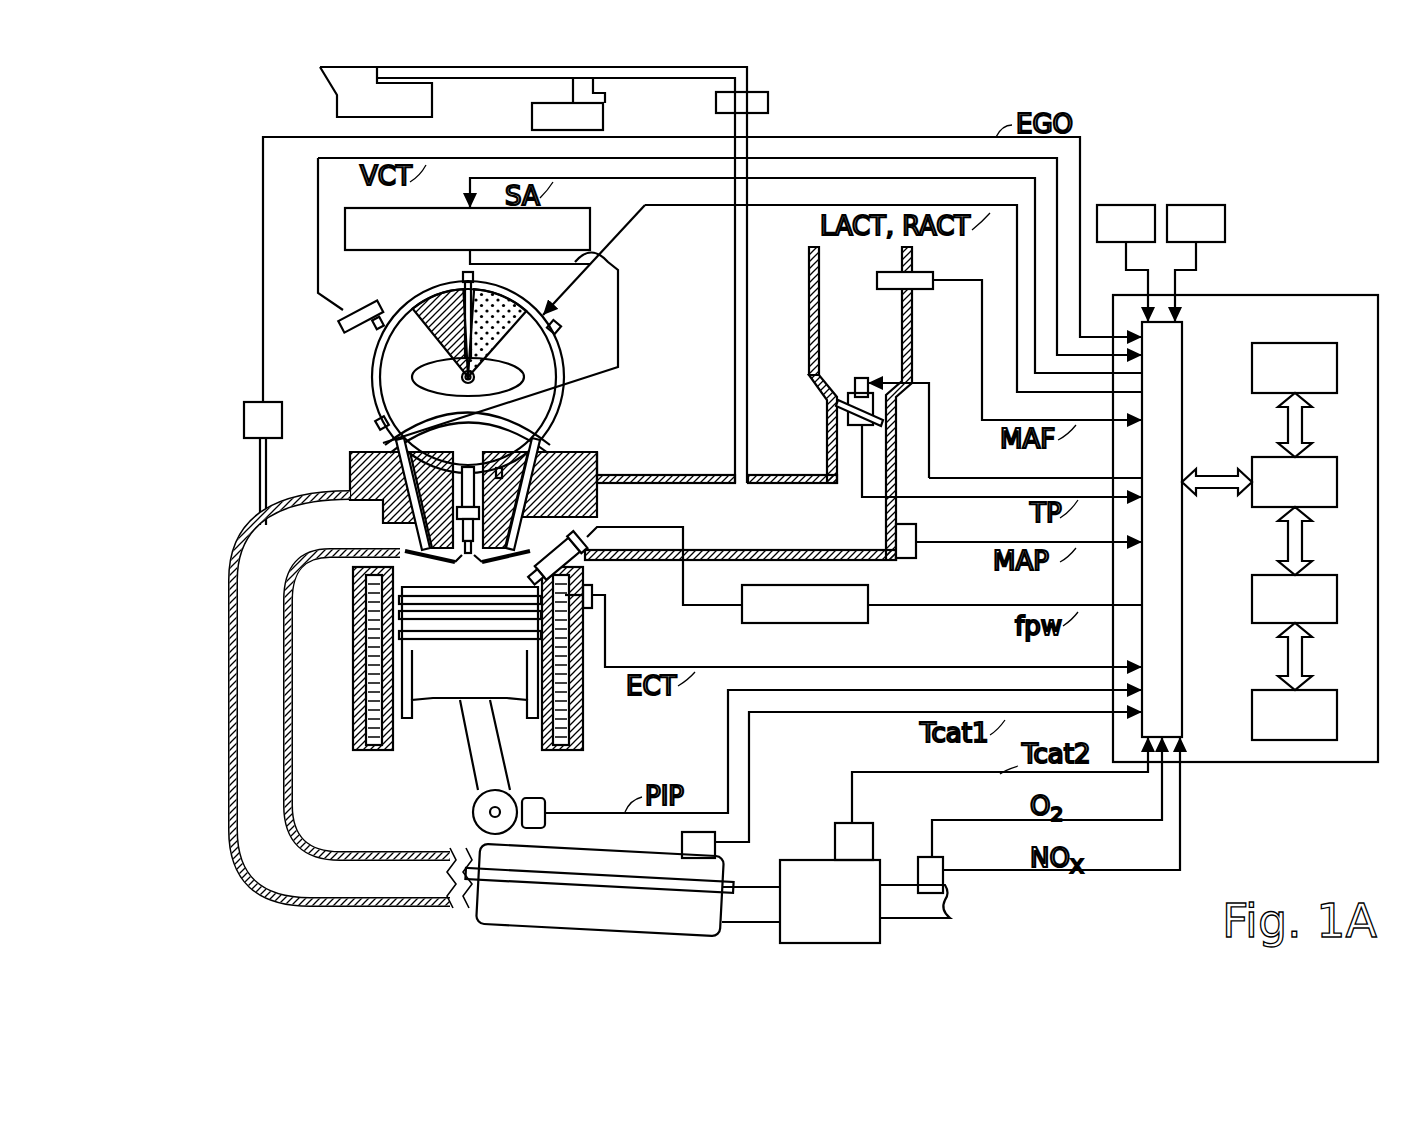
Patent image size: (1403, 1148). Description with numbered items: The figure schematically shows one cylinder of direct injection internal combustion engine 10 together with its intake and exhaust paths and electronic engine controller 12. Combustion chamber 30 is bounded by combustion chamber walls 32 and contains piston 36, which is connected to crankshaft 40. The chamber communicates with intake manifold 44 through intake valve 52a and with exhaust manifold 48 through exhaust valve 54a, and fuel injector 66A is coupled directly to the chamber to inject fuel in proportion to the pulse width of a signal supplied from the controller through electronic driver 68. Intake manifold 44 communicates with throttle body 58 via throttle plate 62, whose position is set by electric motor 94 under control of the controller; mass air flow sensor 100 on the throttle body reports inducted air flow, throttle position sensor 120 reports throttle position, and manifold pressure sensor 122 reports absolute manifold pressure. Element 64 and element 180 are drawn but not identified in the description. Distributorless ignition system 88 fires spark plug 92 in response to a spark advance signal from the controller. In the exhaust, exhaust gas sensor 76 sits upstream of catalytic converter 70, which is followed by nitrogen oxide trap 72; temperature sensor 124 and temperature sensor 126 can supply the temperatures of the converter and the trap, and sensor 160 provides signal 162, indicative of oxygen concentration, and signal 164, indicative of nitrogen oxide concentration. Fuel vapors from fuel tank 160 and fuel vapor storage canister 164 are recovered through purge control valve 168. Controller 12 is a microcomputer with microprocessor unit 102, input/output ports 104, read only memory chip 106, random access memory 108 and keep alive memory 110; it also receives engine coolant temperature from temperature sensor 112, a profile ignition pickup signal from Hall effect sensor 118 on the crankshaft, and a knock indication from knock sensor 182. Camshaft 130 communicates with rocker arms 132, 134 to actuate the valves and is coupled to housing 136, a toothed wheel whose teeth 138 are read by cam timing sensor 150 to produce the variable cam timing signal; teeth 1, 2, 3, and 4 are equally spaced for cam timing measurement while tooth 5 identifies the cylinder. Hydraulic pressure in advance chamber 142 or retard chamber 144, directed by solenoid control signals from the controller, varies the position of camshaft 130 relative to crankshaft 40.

The tooth 1 is at (463, 276).
The tooth 2 is at (556, 331).
The tooth 3 is at (499, 470).
The tooth 4 is at (379, 421).
The tooth 5 is at (377, 330).
The direct injection internal combustion engine 10 is at (636, 378).
The electronic engine controller 12 is at (1335, 296).
The combustion chamber 30 is at (400, 600).
The combustion chamber walls 32 is at (396, 760).
The piston 36 is at (470, 700).
The crankshaft 40 is at (473, 812).
The intake manifold 44 is at (803, 528).
The exhaust manifold 48 is at (250, 563).
The intake valve 52a is at (560, 541).
The exhaust valve 54a is at (400, 546).
The throttle body 58 is at (840, 463).
The throttle plate 62 is at (842, 400).
The intake passage wall 64 is at (812, 309).
The fuel injector 66A is at (590, 566).
The electronic driver 68 is at (880, 597).
The catalytic converter 70 is at (560, 851).
The NOx trap 72 is at (792, 861).
The exhaust gas sensor 76 is at (254, 402).
The distributorless ignition system 88 is at (590, 230).
The spark plug 92 is at (462, 485).
The electric motor 94 is at (862, 378).
The mass air flow sensor 100 is at (920, 280).
The microprocessor unit 102 is at (1310, 458).
The input/output ports 104 is at (1184, 372).
The read only memory chip 106 is at (1278, 348).
The random access memory 108 is at (1310, 576).
The keep alive memory 110 is at (1310, 691).
The temperature sensor 112 is at (596, 600).
The Hall effect sensor 118 is at (536, 800).
The throttle position sensor 120 is at (838, 411).
The manifold pressure sensor 122 is at (915, 536).
The temperature sensor 124 is at (682, 843).
The temperature sensor 126 is at (873, 836).
The camshaft 130 is at (428, 381).
The rocker arm 132 is at (387, 446).
The rocker arm 134 is at (548, 447).
The housing 136 is at (372, 398).
The teeth 138 is at (556, 326).
The advance chamber 142 is at (495, 305).
The retard chamber 144 is at (440, 308).
The cam timing sensor 150 is at (350, 321).
The sensor 160 is at (432, 103).
The signal 162 is at (1160, 815).
The signal 164 is at (603, 118).
The purge control valve 168 is at (768, 102).
The signal input 180 is at (1147, 237).
The knock sensor 182 is at (1217, 237).